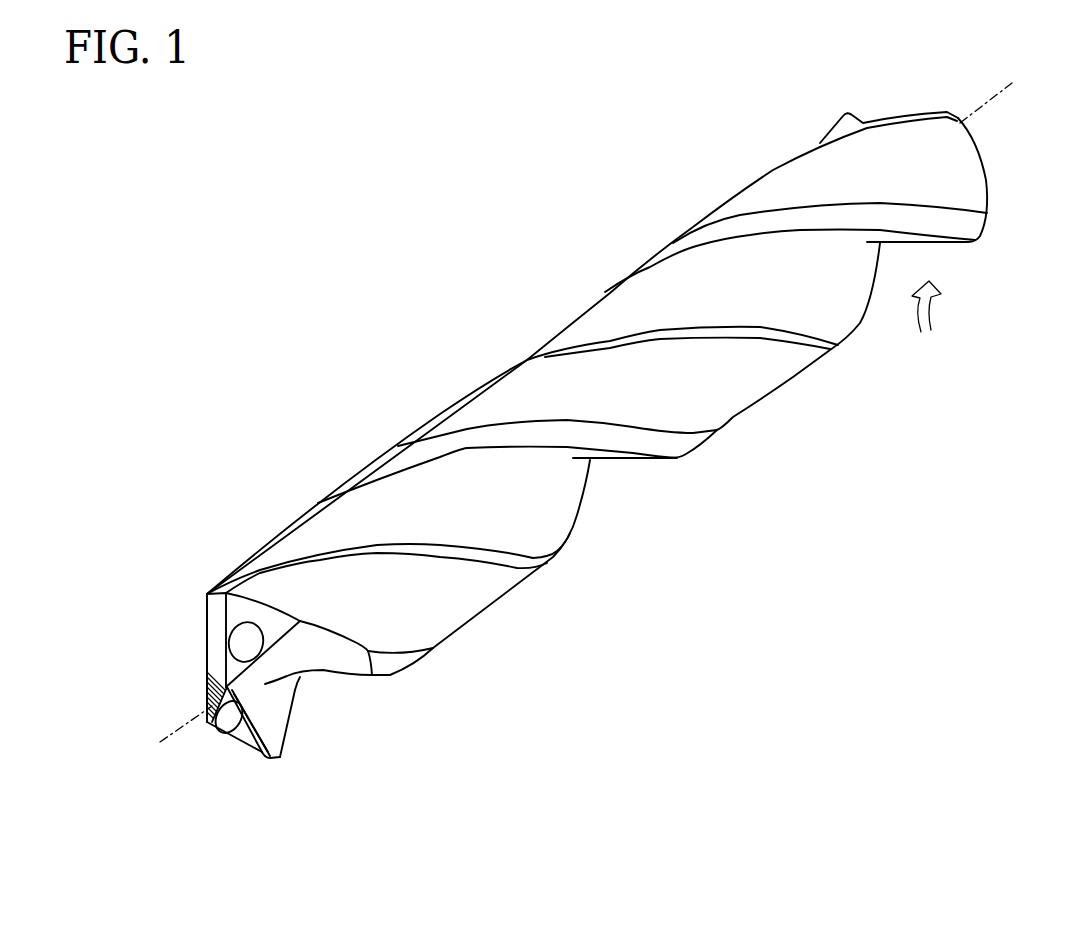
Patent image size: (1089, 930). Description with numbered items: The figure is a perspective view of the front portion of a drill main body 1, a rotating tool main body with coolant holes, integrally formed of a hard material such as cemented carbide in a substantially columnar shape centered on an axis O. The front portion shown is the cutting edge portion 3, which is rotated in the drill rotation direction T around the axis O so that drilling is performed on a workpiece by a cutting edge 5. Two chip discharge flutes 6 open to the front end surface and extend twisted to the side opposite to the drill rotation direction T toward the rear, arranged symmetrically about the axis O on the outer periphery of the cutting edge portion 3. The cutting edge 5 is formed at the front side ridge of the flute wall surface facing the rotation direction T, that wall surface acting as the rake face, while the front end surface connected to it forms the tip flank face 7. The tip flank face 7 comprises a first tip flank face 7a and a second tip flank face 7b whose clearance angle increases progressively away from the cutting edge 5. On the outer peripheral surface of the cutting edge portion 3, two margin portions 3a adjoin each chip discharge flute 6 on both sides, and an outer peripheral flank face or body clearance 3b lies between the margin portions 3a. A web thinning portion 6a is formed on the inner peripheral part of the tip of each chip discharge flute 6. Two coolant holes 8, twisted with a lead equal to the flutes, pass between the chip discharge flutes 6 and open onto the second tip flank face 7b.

The drill main body 1 is at (537, 249).
The cutting edge portion 3 is at (597, 393).
The margin portion 3a is at (690, 445).
The outer peripheral flank face (body clearance) 3b is at (745, 387).
The cutting edge 5 is at (204, 627).
The chip discharge flute 6 is at (511, 329).
The web thinning portion 6a is at (267, 682).
The tip flank face 7 is at (257, 459).
The first tip flank face 7a is at (215, 611).
The second tip flank face 7b is at (245, 607).
The coolant hole 8 is at (232, 719).
The axis O is at (1003, 100).
The drill rotation direction T is at (934, 306).